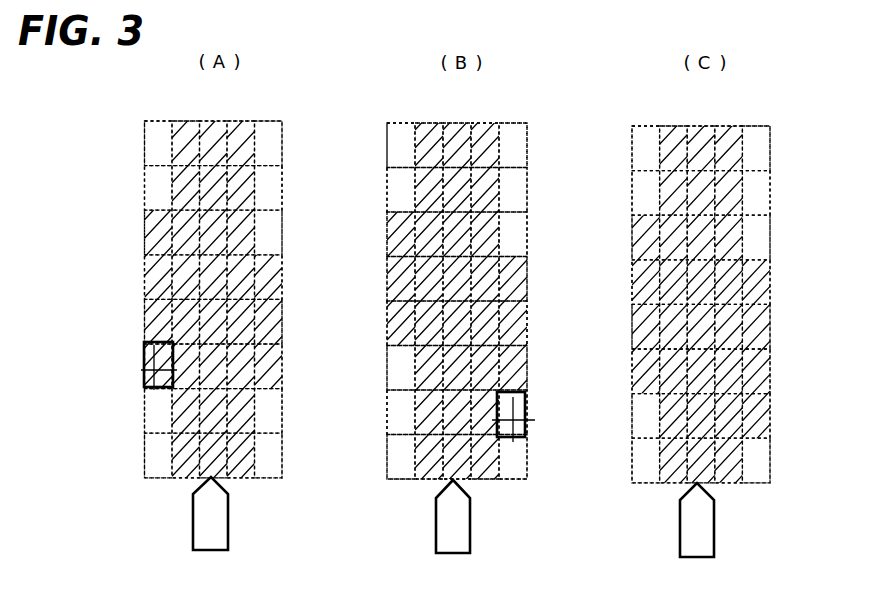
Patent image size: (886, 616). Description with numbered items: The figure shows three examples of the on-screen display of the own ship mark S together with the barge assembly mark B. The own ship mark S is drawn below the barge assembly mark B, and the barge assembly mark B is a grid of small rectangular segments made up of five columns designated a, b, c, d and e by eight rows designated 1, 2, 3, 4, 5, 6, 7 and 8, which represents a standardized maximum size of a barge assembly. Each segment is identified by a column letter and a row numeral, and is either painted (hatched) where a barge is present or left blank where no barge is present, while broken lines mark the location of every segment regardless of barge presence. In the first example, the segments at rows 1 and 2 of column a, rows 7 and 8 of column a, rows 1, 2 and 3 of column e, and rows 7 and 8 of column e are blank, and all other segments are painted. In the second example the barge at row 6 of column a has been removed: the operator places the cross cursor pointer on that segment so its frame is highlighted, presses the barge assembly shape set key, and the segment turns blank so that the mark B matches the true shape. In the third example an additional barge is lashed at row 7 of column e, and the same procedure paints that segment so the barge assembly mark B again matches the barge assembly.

The barge assembly mark B is at (302, 240).
The own ship mark S is at (228, 525).
The row 1 is at (449, 146).
The row 2 is at (449, 191).
The row 3 is at (449, 235).
The row 4 is at (449, 280).
The row 5 is at (449, 324).
The row 6 is at (449, 369).
The row 7 is at (449, 414).
The row 8 is at (449, 458).
The column a is at (402, 291).
The column b is at (429, 291).
The column c is at (457, 291).
The column d is at (484, 291).
The column e is at (513, 291).